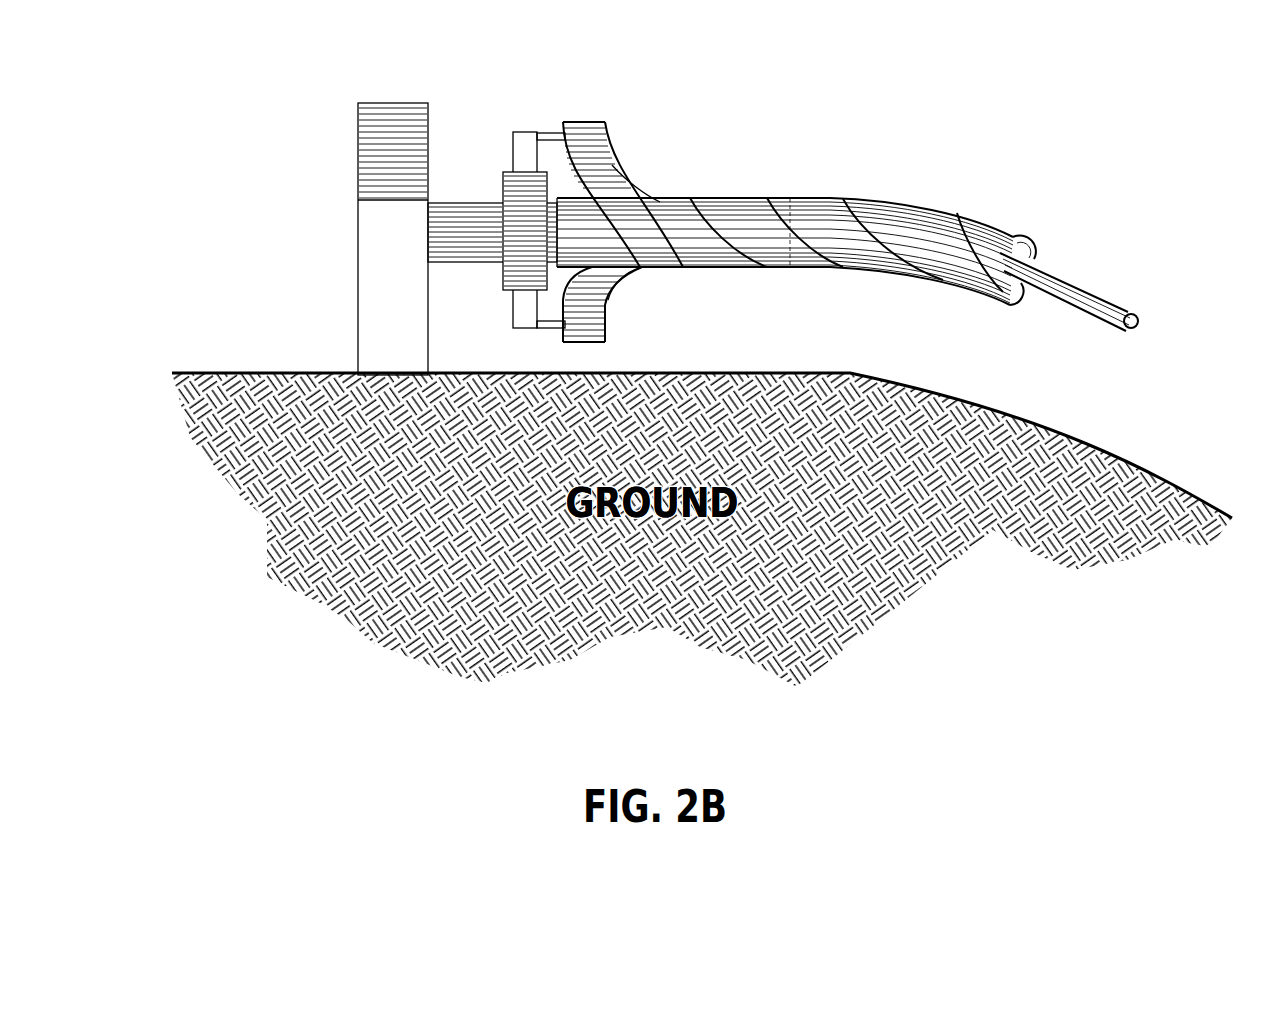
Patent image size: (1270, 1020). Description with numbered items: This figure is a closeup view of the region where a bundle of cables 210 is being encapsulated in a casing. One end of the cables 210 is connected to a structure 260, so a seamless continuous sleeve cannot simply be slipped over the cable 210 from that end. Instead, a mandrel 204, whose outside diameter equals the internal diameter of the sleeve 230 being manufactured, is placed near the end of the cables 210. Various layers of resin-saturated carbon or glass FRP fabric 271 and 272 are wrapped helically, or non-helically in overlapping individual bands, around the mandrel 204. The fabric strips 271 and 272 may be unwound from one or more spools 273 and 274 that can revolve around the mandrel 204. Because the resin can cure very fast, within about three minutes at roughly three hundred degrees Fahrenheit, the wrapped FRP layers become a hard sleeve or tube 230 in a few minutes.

The mandrel 204 is at (720, 195).
The bundle of cables 210 is at (1082, 268).
The sleeve 230 is at (950, 245).
The structure 260 is at (393, 323).
The resin-saturated FRP fabric 271 is at (607, 172).
The resin-saturated FRP fabric 272 is at (610, 285).
The spool 273 is at (575, 120).
The spool 274 is at (588, 342).